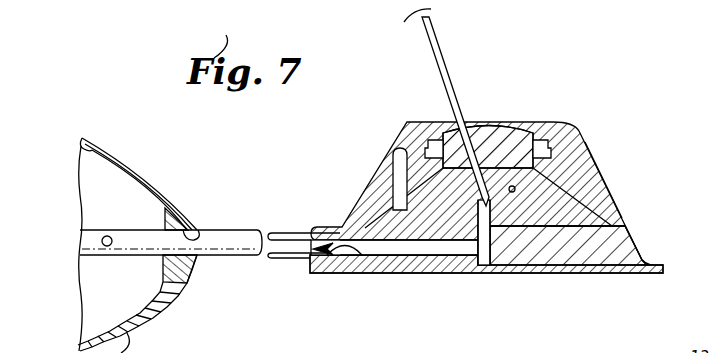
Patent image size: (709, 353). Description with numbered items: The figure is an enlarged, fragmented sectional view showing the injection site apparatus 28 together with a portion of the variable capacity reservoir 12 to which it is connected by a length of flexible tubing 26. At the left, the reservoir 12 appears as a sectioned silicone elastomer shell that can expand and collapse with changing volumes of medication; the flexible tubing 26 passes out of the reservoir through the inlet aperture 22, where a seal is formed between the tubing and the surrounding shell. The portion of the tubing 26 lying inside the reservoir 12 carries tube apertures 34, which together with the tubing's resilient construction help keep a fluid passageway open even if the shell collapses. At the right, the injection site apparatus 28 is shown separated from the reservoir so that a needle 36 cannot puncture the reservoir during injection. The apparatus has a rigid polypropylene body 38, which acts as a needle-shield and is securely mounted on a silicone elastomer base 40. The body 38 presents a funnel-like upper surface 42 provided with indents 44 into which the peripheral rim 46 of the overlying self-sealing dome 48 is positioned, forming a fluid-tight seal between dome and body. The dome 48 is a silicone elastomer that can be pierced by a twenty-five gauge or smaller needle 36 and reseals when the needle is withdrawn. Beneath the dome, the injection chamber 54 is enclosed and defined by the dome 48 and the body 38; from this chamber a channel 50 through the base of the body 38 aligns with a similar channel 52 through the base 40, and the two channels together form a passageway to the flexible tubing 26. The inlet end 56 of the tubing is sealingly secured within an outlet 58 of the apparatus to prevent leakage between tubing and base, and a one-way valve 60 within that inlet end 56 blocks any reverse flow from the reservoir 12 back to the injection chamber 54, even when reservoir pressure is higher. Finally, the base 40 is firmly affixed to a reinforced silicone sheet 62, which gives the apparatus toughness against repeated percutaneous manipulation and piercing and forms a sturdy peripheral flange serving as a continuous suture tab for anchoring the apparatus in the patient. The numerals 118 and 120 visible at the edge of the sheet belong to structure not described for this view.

The variable capacity reservoir 12 is at (153, 156).
The inlet aperture 22 is at (199, 231).
The flexible tubing 26 is at (230, 258).
The injection site apparatus 28 is at (495, 177).
The tube apertures 34 is at (110, 236).
The needle 36 is at (435, 33).
The rigid polypropylene body 38 is at (593, 158).
The silicone elastomer base 40 is at (633, 243).
The funnel-like upper surface 42 is at (393, 172).
The indents 44 is at (410, 127).
The peripheral rim 46 is at (578, 127).
The self-sealing dome 48 is at (493, 128).
The channel 50 is at (479, 268).
The channel 52 is at (426, 250).
The injection chamber 54 is at (505, 165).
The inlet end 56 is at (300, 258).
The outlet 58 is at (313, 228).
The one-way valve 60 is at (359, 258).
The reinforced silicone sheet 62 is at (617, 272).
The adjacent figure element 118 is at (675, 0).
The adjacent figure element 120 is at (635, 0).